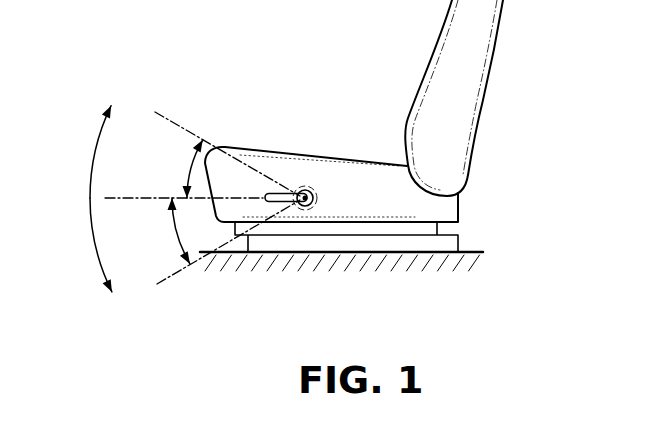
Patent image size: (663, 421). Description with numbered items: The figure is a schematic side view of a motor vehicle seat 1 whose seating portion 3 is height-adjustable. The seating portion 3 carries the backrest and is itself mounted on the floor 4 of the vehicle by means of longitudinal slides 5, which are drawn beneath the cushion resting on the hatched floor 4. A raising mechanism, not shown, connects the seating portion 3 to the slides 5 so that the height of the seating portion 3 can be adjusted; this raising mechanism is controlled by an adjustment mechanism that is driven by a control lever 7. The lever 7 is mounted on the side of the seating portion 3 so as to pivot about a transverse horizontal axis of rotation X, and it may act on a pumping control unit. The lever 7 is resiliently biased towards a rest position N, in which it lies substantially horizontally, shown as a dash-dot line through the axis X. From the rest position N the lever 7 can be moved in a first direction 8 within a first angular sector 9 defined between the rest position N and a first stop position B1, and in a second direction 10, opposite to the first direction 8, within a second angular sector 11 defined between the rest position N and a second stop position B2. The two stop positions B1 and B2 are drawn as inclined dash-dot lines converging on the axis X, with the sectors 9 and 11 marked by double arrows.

The motor vehicle seat 1 is at (378, 126).
The seating portion 3 is at (342, 185).
The floor 4 is at (463, 262).
The longitudinal slides 5 is at (471, 221).
The control lever 7 is at (297, 191).
The first direction 8 is at (95, 152).
The first angular sector 9 is at (190, 170).
The second direction 10 is at (95, 245).
The second angular sector 11 is at (177, 234).
The rest position N is at (172, 202).
The first stop position B1 is at (210, 149).
The second stop position B2 is at (216, 257).
The axis of rotation X is at (306, 204).